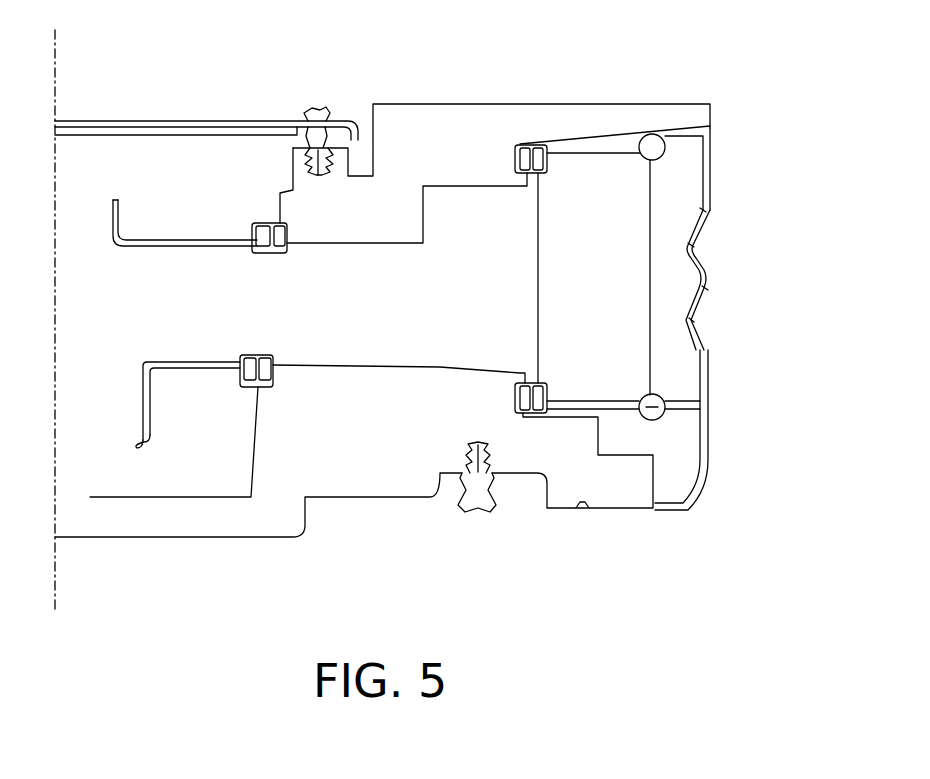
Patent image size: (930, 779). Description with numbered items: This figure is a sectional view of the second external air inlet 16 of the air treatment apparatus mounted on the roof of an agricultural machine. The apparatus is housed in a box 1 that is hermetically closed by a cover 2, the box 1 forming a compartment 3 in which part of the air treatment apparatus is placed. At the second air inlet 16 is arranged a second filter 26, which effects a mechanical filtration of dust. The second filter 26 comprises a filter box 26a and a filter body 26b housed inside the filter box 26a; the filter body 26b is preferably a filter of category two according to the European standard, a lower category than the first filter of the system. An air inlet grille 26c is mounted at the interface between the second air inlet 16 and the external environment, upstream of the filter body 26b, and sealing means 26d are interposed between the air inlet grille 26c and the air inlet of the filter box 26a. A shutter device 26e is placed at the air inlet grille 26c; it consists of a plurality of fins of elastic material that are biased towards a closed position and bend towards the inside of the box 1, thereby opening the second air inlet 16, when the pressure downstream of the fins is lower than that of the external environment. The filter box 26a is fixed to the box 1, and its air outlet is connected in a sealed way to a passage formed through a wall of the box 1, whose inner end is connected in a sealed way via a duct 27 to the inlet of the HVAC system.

The box 1 is at (440, 100).
The cover 2 is at (115, 120).
The compartment 3 is at (288, 188).
The second air inlet 16 is at (740, 322).
The second filter 26 is at (608, 302).
The filter box 26a is at (563, 150).
The filter body 26b is at (565, 377).
The air inlet grille 26c is at (705, 482).
The sealing means 26d is at (663, 230).
The shutter device 26e is at (715, 225).
The duct 27 is at (162, 238).